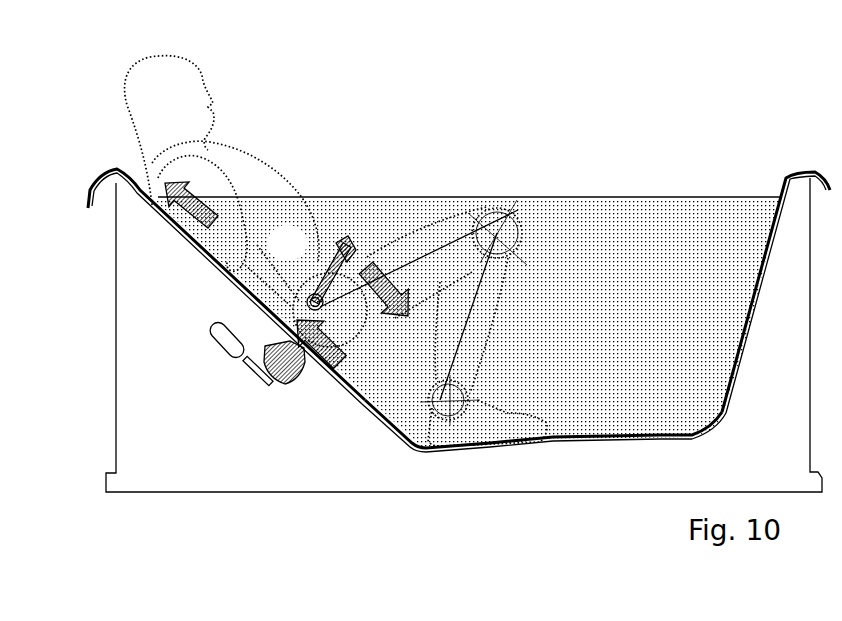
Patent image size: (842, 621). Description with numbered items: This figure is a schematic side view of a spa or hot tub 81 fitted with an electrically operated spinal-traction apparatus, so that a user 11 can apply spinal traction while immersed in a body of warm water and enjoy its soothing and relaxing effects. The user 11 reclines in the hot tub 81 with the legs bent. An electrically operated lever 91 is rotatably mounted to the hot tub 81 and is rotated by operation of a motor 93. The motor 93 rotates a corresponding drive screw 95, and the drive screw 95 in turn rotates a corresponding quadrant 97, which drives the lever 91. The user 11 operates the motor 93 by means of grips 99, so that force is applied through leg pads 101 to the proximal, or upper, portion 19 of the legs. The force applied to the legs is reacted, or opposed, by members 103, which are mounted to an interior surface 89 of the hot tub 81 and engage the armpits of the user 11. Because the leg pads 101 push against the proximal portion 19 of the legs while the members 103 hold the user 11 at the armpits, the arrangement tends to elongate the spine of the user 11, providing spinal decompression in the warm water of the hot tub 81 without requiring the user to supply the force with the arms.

The user 11 is at (187, 63).
The proximal portion of legs 19 is at (382, 262).
The hot tub 81 is at (785, 173).
The interior surface 89 is at (395, 418).
The electrically operated lever 91 is at (333, 257).
The motor 93 is at (228, 343).
The drive screw 95 is at (255, 370).
The quadrant 97 is at (292, 372).
The grips 99 is at (351, 378).
The leg pads 101 is at (365, 258).
The members 103 is at (200, 243).